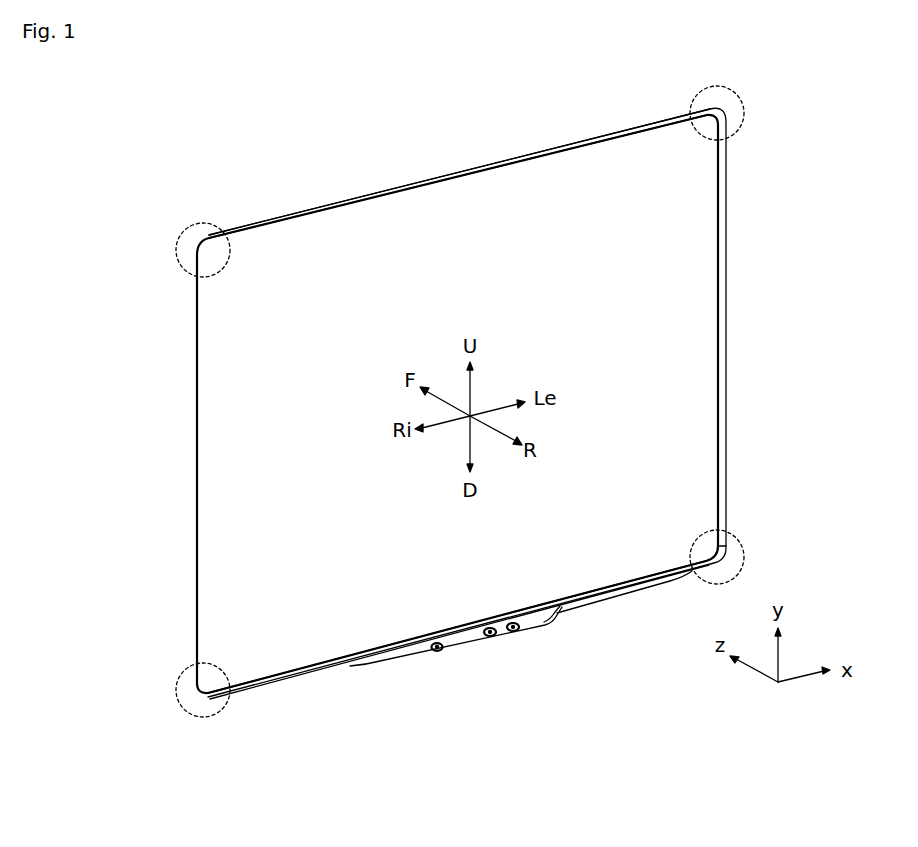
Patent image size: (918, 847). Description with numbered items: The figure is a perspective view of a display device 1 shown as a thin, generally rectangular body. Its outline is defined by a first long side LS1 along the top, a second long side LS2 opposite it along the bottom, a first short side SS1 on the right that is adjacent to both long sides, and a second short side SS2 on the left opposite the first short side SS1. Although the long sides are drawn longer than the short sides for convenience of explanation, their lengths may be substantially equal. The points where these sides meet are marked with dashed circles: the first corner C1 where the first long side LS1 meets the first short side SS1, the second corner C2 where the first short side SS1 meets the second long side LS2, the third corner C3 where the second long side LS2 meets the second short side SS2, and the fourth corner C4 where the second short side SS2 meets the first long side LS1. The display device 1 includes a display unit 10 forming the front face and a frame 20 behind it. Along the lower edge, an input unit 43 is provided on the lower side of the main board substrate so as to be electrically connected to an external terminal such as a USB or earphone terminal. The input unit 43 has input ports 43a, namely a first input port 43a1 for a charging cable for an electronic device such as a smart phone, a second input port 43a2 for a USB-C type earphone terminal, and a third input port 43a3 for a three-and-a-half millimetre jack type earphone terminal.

The display device 1 is at (196, 124).
The display unit 10 is at (703, 262).
The frame 20 is at (721, 412).
The input unit 43 is at (562, 622).
The input ports 43a is at (511, 721).
The first input port 43a1 is at (555, 688).
The second input port 43a2 is at (492, 638).
The third input port 43a3 is at (437, 652).
The first long side LS1 is at (486, 165).
The second long side LS2 is at (267, 682).
The first short side SS1 is at (727, 320).
The second short side SS2 is at (197, 440).
The first corner C1 is at (727, 103).
The second corner C2 is at (728, 546).
The third corner C3 is at (193, 682).
The fourth corner C4 is at (200, 236).